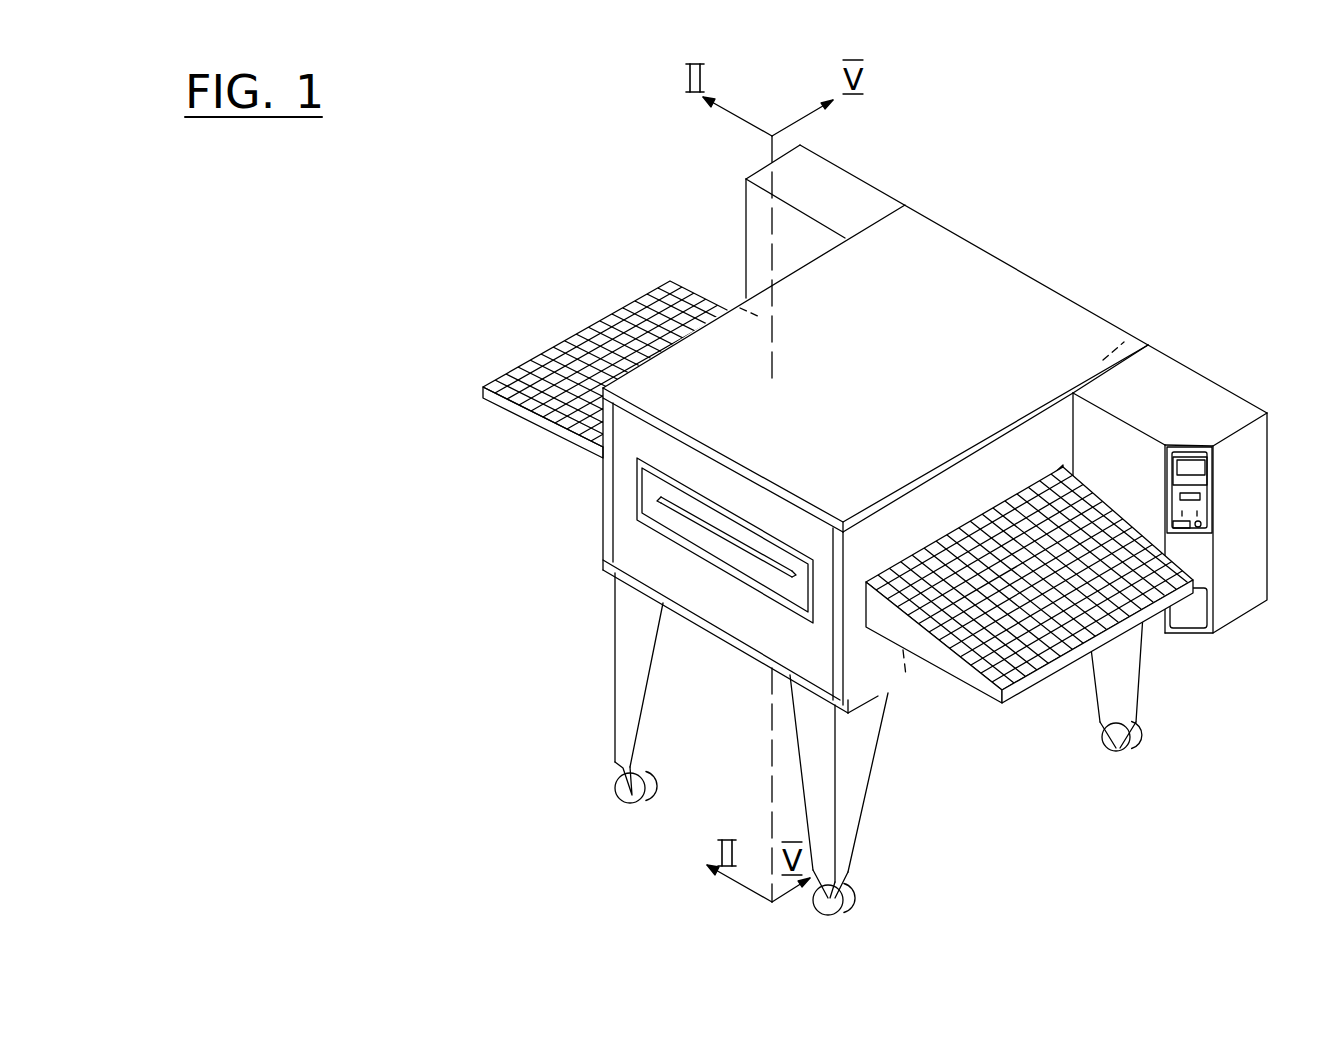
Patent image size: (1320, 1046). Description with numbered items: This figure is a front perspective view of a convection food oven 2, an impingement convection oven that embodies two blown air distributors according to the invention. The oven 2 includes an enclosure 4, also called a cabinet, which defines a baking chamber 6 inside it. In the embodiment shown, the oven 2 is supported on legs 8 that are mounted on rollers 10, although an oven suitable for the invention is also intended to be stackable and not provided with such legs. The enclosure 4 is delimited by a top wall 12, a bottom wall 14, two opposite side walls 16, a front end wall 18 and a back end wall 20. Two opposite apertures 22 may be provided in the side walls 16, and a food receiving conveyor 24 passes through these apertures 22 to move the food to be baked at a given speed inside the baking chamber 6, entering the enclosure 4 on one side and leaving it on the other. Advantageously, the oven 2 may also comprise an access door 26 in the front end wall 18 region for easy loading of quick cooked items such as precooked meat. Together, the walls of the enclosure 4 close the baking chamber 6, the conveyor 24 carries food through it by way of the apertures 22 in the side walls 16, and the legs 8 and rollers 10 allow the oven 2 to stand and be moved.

The convection food oven 2 is at (833, 495).
The enclosure 4 is at (823, 467).
The baking chamber 6 is at (1052, 490).
The legs 8 is at (617, 738).
The rollers 10 is at (648, 780).
The top wall 12 is at (945, 237).
The bottom wall 14 is at (1029, 610).
The side walls 16 is at (733, 303).
The front end wall 18 is at (653, 583).
The back end wall 20 is at (1130, 348).
The apertures 22 is at (960, 537).
The food receiving conveyor 24 is at (483, 400).
The access door 26 is at (653, 510).